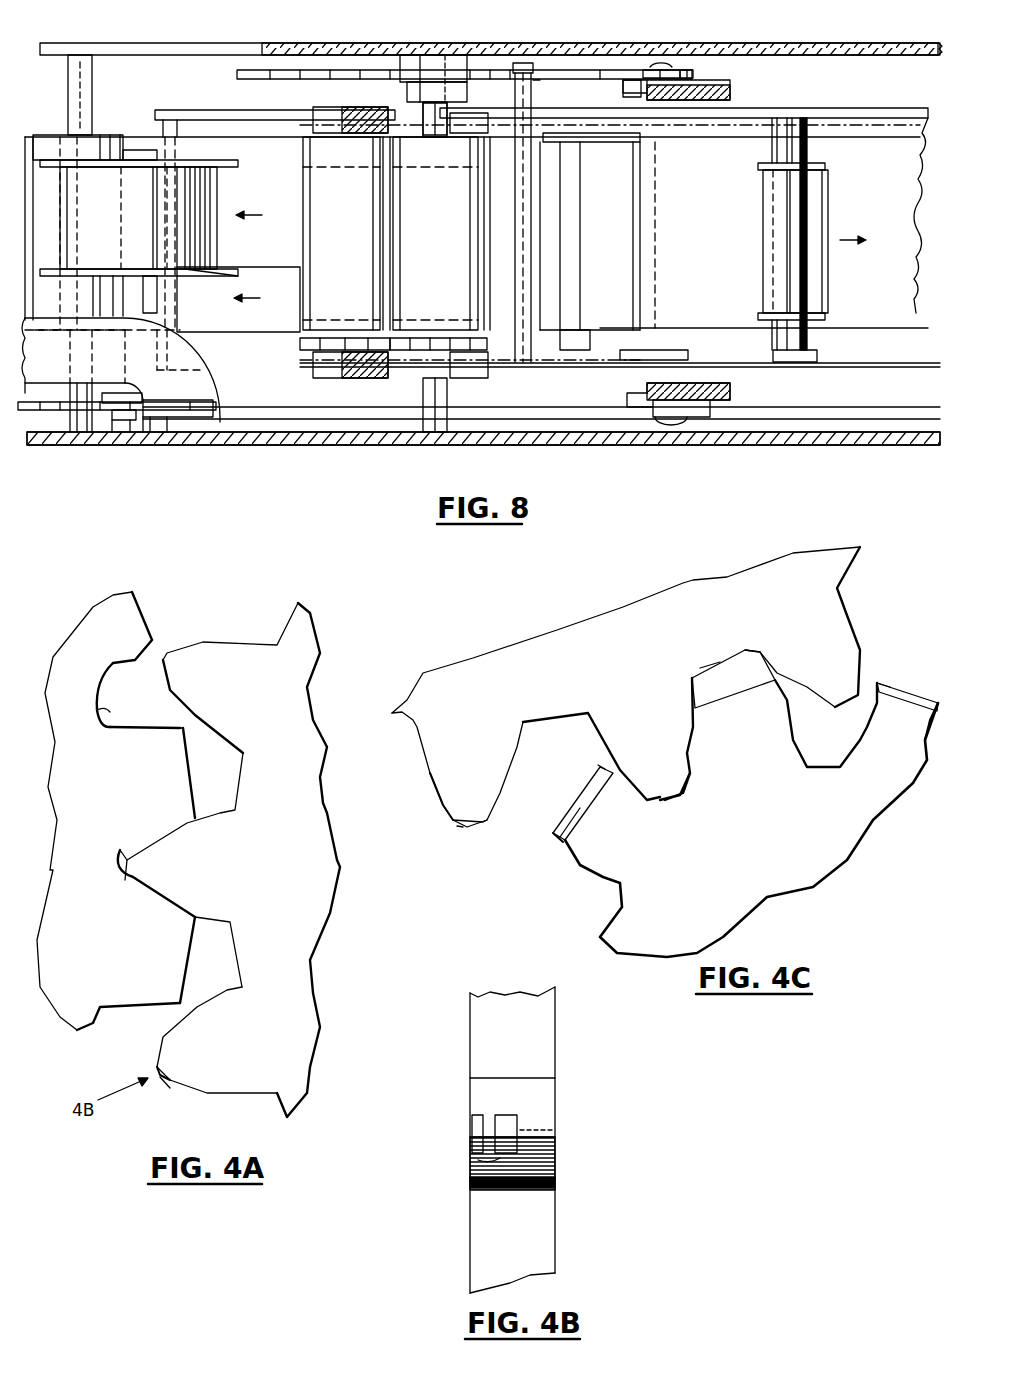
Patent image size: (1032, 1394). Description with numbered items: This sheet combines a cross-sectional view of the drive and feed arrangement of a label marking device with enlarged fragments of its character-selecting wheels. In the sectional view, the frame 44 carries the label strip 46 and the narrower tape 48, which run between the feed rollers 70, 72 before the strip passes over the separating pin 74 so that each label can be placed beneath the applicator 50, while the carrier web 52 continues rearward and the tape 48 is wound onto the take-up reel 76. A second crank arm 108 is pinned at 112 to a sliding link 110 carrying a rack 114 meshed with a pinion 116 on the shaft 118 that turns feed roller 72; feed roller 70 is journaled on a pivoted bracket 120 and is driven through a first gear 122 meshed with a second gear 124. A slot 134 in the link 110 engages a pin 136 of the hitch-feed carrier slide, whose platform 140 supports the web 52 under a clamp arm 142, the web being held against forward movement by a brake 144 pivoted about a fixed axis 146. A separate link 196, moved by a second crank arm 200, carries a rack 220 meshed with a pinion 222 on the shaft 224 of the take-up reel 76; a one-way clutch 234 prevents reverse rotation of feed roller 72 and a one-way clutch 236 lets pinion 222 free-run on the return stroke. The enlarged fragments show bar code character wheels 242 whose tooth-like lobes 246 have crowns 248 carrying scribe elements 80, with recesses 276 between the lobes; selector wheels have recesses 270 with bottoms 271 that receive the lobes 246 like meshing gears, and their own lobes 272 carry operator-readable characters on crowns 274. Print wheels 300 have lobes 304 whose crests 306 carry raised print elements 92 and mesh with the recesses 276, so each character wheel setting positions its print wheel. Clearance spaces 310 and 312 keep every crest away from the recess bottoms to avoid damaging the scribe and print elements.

In FIG. 8, the frame 44 is at (264, 54).
In FIG. 8, the label strip 46 is at (279, 324).
In FIG. 8, the tape 48 is at (268, 197).
In FIG. 8, the applicator 50 is at (58, 138).
In FIG. 8, the carrier web 52 is at (729, 287).
In FIG. 8, the feed roller 70 is at (310, 238).
In FIG. 8, the feed roller 72 is at (470, 244).
In FIG. 8, the pin 74 is at (154, 136).
In FIG. 8, the take-up reel 76 is at (201, 284).
In FIG. 4A, the scribe elements 80 is at (158, 1072).
In FIG. 4C, the scribe elements 80 is at (462, 834).
In FIG. 4B, the scribe elements 80 is at (548, 1136).
In FIG. 4C, the print elements 92 is at (600, 766).
In FIG. 8, the second crank arm 108 is at (710, 80).
In FIG. 8, the link 110 is at (596, 72).
In FIG. 8, the pin connection 112 is at (664, 66).
In FIG. 8, the rack 114 is at (308, 70).
In FIG. 8, the pinion 116 is at (412, 52).
In FIG. 8, the shaft 118 is at (448, 384).
In FIG. 8, the bracket 120 is at (314, 356).
In FIG. 8, the first gear 122 is at (324, 344).
In FIG. 8, the second gear 124 is at (450, 318).
In FIG. 8, the slot 134 is at (522, 62).
In FIG. 8, the pin 136 is at (531, 90).
In FIG. 8, the platform 140 is at (532, 322).
In FIG. 8, the clamp arm 142 is at (638, 256).
In FIG. 8, the brake 144 is at (828, 198).
In FIG. 8, the fixed axis 146 is at (810, 224).
In FIG. 8, the link 196 is at (338, 422).
In FIG. 8, the second crank arm 200 is at (730, 394).
In FIG. 8, the rack 220 is at (70, 432).
In FIG. 8, the pinion 222 is at (122, 432).
In FIG. 8, the shaft 224 is at (132, 296).
In FIG. 8, the one-way clutch 234 is at (500, 36).
In FIG. 8, the one-way clutch 236 is at (166, 437).
In FIG. 4A, the bar code character wheels 242 is at (298, 992).
In FIG. 4C, the bar code character wheels 242 is at (562, 640).
In FIG. 4B, the bar code character wheels 242 is at (537, 1024).
In FIG. 4A, the lobes 246 is at (254, 618).
In FIG. 4C, the lobes 246 is at (452, 774).
In FIG. 4B, the lobes 246 is at (486, 1094).
In FIG. 4A, the crown 248 is at (166, 1079).
In FIG. 4C, the crown 248 is at (462, 828).
In FIG. 4B, the crown 248 is at (484, 1136).
In FIG. 4A, the recesses 270 is at (116, 674).
In FIG. 4A, the bottom 271 is at (110, 726).
In FIG. 4A, the lobes 272 is at (135, 592).
In FIG. 4A, the crowns 274 is at (141, 612).
In FIG. 4A, the recesses 276 is at (229, 808).
In FIG. 4C, the recesses 276 is at (526, 732).
In FIG. 4C, the print wheels 300 is at (832, 852).
In FIG. 4C, the lobes 304 is at (602, 856).
In FIG. 4C, the crest 306 is at (570, 812).
In FIG. 4A, the clearance space 310 is at (126, 882).
In FIG. 4C, the clearance space 312 is at (678, 798).